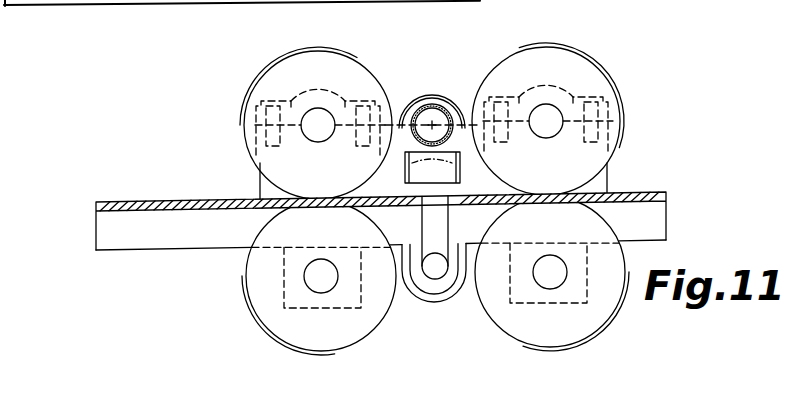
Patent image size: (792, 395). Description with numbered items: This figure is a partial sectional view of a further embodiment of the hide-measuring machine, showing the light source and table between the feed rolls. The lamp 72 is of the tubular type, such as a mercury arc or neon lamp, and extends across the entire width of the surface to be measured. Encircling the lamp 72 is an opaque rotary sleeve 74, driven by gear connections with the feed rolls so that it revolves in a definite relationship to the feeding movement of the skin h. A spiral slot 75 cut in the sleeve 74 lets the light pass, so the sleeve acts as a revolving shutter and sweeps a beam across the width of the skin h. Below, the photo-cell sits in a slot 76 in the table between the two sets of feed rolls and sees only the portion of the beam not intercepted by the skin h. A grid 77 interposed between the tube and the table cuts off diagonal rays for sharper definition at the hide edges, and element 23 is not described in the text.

The skin h is at (631, 192).
The pivot pin 23 is at (431, 280).
The lamp 72 is at (447, 108).
The rotary sleeve 74 is at (433, 112).
The spiral slot 75 is at (410, 100).
The slot 76 is at (422, 225).
The grid 77 is at (442, 173).